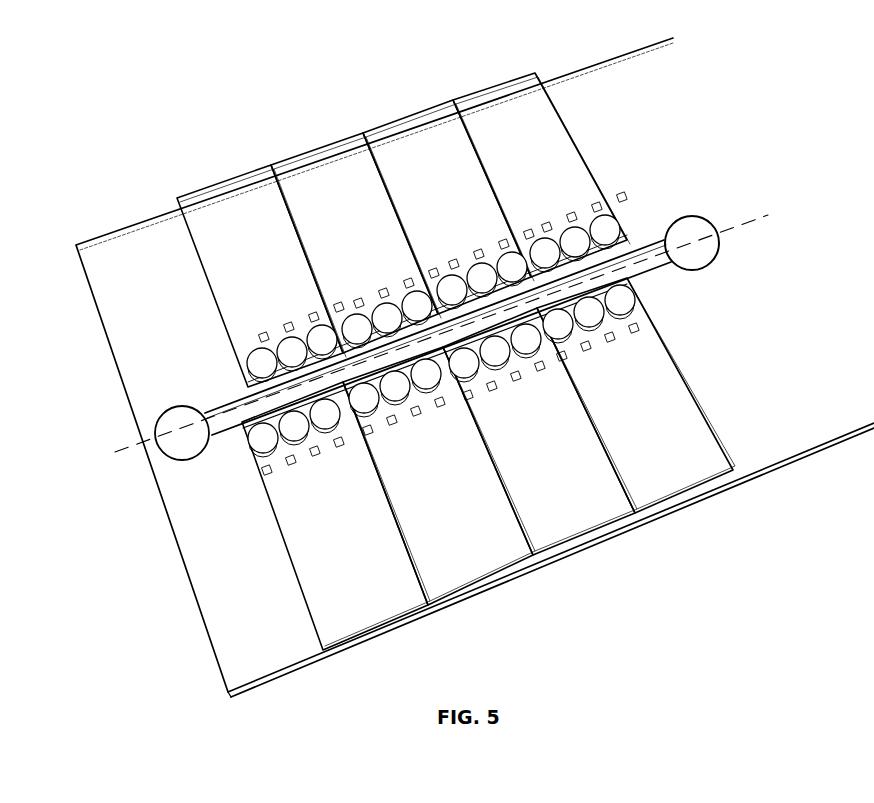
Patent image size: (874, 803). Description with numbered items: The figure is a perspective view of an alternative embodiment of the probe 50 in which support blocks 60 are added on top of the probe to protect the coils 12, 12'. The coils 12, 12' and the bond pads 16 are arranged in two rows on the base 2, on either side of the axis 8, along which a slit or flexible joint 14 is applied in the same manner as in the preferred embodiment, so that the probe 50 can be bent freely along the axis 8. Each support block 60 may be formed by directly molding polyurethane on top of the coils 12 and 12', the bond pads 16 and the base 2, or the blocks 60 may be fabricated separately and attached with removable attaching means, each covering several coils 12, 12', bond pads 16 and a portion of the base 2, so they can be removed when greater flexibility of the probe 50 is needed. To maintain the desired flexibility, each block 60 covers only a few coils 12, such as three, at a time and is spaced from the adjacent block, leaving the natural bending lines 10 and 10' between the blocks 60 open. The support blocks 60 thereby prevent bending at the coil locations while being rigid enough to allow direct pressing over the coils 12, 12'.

The base 2 is at (223, 613).
The axis 8 is at (433, 312).
The natural bending line 10 is at (488, 473).
The natural bending line 10' is at (403, 230).
The coil 12 is at (424, 383).
The coil 12' is at (403, 298).
The slit or flexible joint 14 is at (680, 230).
The bond pad 16 is at (655, 322).
The probe 50 is at (767, 508).
The support block 60 is at (462, 357).